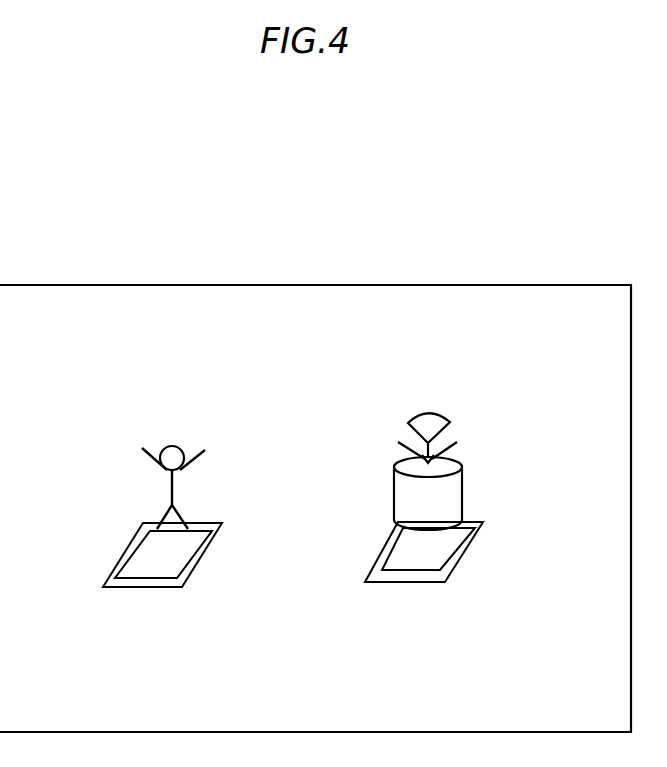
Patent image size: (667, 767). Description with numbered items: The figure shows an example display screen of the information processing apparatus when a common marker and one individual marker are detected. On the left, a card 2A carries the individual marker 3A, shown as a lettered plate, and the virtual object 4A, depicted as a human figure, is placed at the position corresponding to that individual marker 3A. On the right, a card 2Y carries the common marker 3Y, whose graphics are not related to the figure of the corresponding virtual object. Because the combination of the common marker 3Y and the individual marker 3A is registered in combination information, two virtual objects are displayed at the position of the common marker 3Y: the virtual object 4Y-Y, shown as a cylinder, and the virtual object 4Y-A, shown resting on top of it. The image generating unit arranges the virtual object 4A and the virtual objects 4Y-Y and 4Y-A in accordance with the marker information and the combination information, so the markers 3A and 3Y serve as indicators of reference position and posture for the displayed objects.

The virtual object 4A is at (179, 446).
The card 2A is at (214, 522).
The individual marker 3A is at (186, 566).
The virtual object 4Y-A is at (441, 415).
The virtual object 4Y-Y is at (465, 489).
The card 2Y is at (477, 520).
The common marker 3Y is at (449, 560).